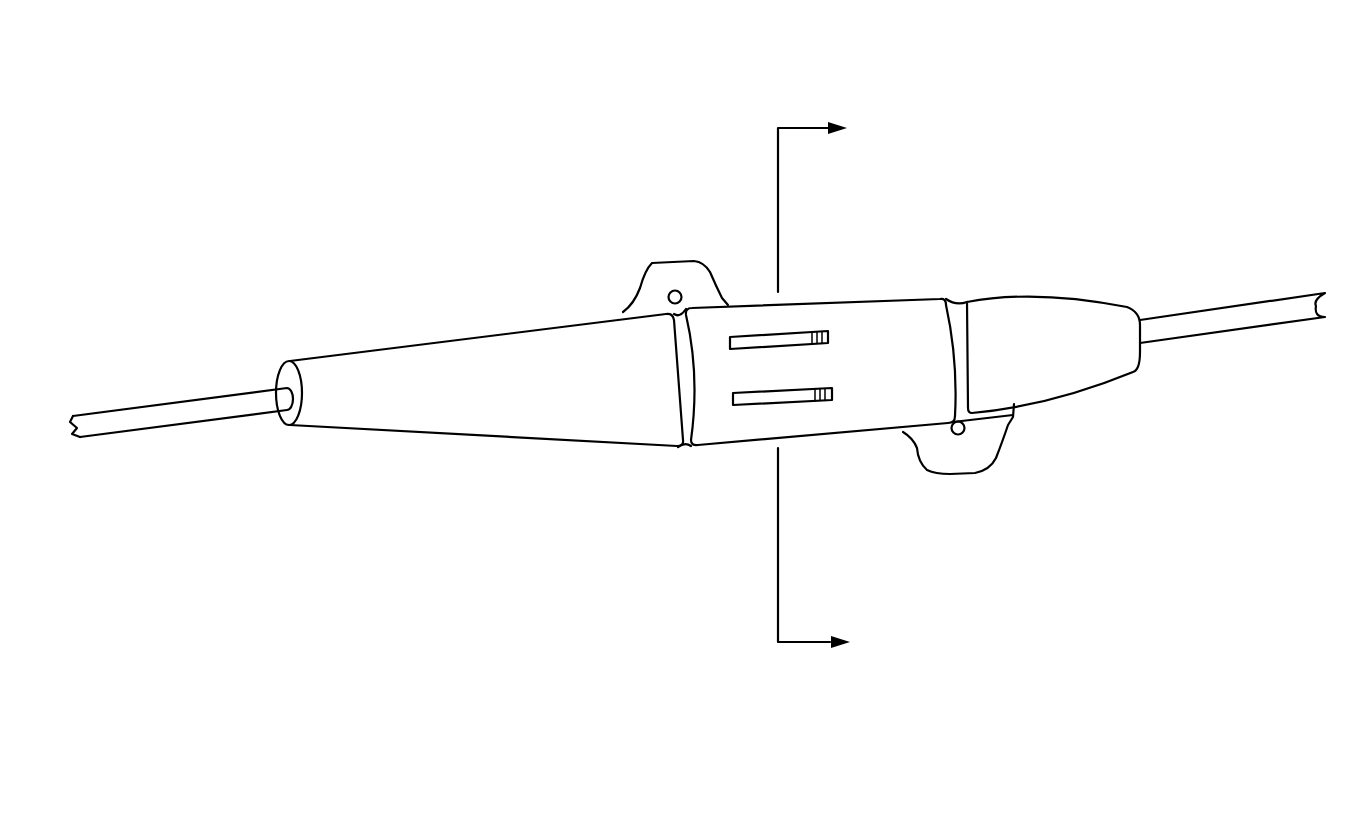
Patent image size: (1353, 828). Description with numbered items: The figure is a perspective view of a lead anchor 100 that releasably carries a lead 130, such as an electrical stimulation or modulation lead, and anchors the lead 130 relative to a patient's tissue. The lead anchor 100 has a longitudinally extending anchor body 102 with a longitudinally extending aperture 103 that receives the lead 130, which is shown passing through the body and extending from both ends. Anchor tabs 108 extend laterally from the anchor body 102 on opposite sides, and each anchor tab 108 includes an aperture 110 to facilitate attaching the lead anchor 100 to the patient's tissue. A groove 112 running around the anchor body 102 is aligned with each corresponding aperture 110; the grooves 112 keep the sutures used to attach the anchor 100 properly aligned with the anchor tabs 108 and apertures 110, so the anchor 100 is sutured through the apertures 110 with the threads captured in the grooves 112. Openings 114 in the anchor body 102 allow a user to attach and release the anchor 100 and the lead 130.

The lead anchor 100 is at (1022, 193).
The anchor body 102 is at (478, 350).
The aperture 103 is at (280, 378).
The anchor tab 108 is at (663, 273).
The aperture 110 is at (677, 291).
The groove 112 is at (958, 337).
The opening 114 is at (792, 397).
The lead 130 is at (147, 404).